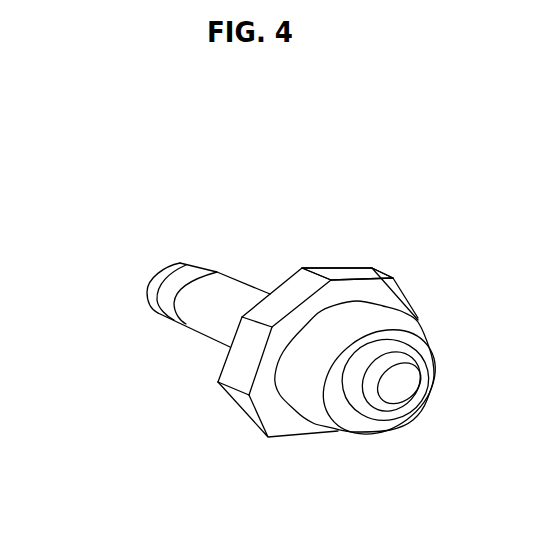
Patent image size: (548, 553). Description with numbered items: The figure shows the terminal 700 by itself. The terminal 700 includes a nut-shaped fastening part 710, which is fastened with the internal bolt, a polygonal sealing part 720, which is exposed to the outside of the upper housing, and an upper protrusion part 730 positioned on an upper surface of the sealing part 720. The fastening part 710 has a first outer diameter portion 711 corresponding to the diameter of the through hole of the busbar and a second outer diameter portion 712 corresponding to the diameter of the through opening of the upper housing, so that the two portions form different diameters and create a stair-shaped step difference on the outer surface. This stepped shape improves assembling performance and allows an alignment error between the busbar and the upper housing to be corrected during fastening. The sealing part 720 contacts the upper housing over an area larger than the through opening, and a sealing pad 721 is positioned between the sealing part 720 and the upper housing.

The terminal 700 is at (285, 129).
The fastening part 710 is at (130, 428).
The first outer diameter portion 711 is at (350, 409).
The second outer diameter portion 712 is at (307, 395).
The sealing part 720 is at (227, 368).
The sealing pad 721 is at (386, 293).
The upper protrusion part 730 is at (160, 270).